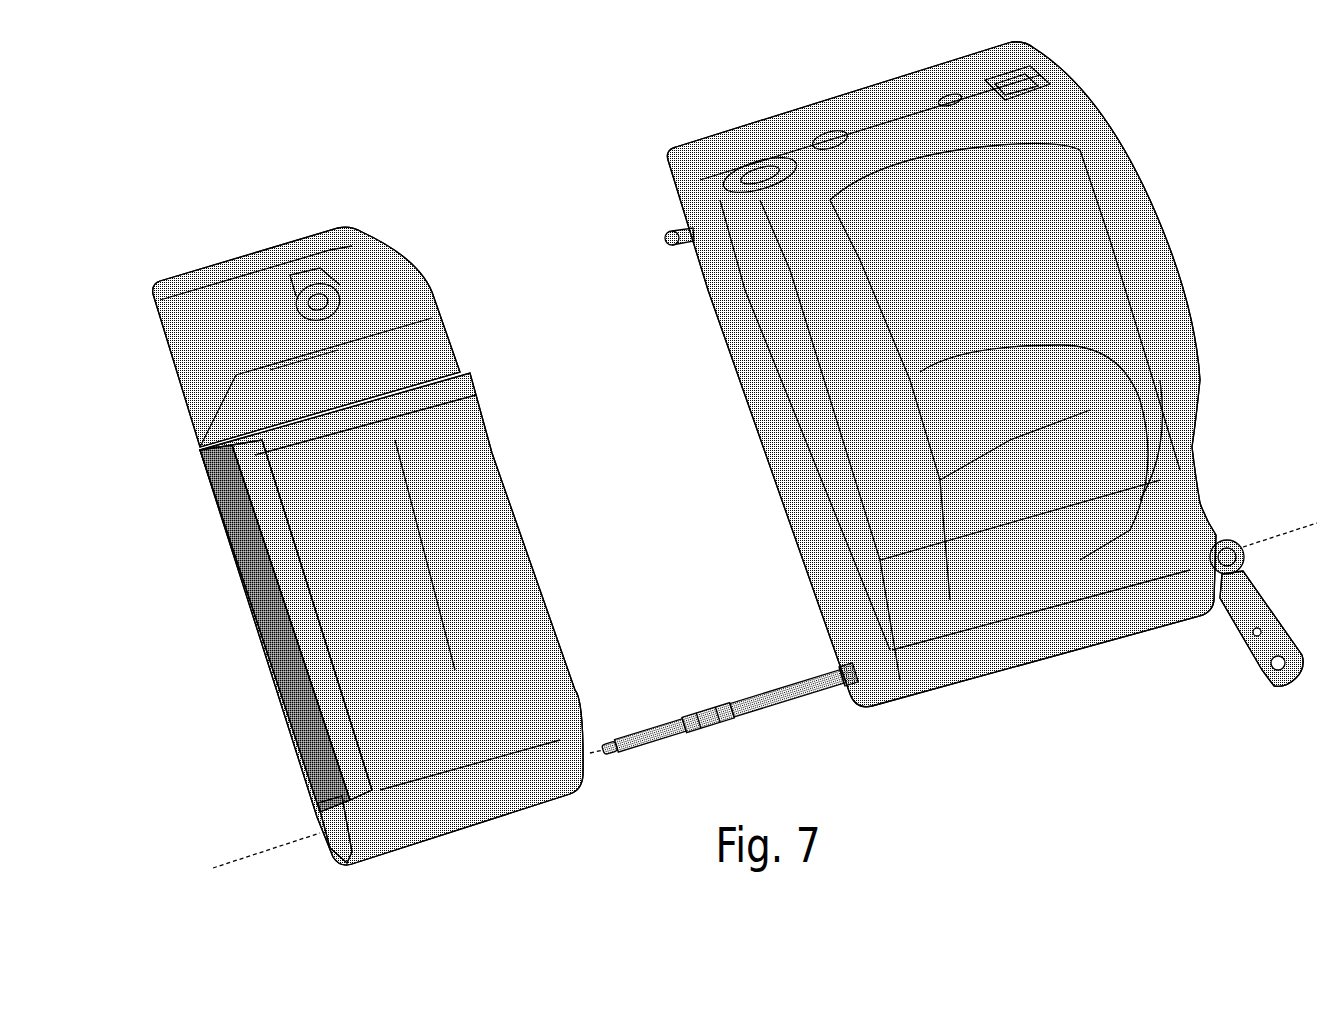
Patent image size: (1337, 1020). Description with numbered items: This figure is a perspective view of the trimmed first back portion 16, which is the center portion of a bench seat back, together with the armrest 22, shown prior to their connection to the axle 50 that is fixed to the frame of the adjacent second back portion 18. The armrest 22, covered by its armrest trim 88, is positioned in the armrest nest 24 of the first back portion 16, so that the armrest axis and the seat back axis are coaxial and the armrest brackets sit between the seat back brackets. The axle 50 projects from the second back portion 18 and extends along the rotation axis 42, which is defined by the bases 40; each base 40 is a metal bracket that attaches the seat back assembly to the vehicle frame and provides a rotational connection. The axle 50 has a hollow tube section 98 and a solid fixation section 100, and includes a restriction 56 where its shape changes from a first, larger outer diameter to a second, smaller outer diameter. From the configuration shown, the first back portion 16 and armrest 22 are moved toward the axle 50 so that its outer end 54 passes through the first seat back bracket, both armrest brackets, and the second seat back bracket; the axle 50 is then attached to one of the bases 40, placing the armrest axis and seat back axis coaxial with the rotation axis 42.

The first back portion 16 is at (207, 270).
The second back portion 18 is at (870, 92).
The armrest 22 is at (235, 590).
The armrest nest 24 is at (223, 543).
The base 40 is at (1257, 668).
The rotation axis 42 is at (308, 837).
The axle 50 is at (820, 739).
The outer end 54 is at (652, 779).
The restriction 56 is at (759, 750).
The armrest trim 88 is at (548, 807).
The hollow tube section 98 is at (732, 728).
The solid fixation section 100 is at (620, 704).